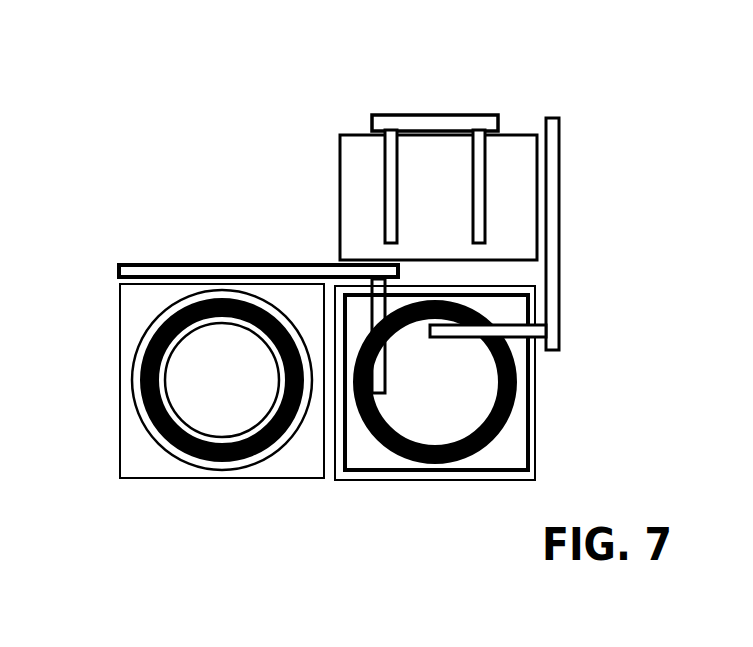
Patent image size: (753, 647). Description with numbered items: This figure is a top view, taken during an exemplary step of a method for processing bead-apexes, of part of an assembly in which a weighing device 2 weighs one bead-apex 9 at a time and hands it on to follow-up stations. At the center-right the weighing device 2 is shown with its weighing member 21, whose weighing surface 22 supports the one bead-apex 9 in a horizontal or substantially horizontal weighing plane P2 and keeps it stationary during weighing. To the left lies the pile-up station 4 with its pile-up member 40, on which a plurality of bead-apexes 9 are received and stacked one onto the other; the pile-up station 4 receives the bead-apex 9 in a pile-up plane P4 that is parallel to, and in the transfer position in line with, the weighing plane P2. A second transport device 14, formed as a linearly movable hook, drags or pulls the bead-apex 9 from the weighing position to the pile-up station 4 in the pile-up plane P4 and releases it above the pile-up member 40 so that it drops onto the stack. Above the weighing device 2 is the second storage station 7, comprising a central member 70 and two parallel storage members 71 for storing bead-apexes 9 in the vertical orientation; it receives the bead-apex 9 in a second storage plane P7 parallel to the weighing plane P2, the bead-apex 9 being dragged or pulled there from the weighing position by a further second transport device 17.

The second storage station 7 is at (438, 324).
The central member 70 is at (387, 116).
The storage members 71 is at (471, 223).
The second storage plane P7 is at (527, 135).
The second transport device 14 is at (267, 273).
The bead-apex 9 is at (209, 300).
The second transport device 17 is at (553, 320).
The pile-up station 4 is at (188, 439).
The pile-up plane P4 is at (188, 381).
The pile-up member 40 is at (130, 450).
The weighing device 2 is at (479, 454).
The weighing plane P2 is at (479, 415).
The weighing surface 22 is at (507, 450).
The weighing member 21 is at (481, 419).